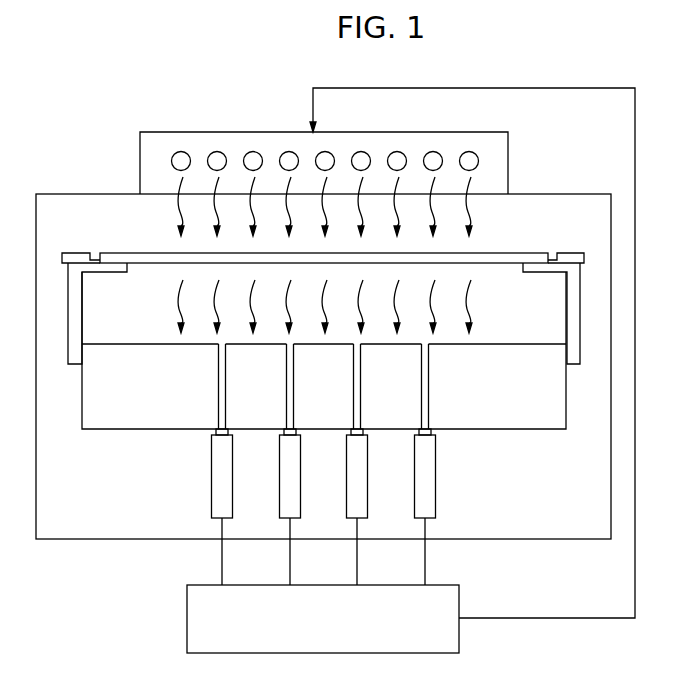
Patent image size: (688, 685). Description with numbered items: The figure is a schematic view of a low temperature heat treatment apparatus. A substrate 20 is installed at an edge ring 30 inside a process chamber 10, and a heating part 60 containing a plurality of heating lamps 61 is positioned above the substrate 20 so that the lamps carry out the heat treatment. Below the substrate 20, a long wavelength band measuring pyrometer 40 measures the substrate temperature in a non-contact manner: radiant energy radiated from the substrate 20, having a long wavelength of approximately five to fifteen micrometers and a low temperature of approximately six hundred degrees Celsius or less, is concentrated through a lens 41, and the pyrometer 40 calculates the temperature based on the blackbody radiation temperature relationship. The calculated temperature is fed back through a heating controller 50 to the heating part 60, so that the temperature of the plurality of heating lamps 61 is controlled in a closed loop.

The process chamber 10 is at (571, 193).
The substrate 20 is at (517, 253).
The edge ring 30 is at (571, 253).
The long wavelength band measuring pyrometer 40 is at (212, 474).
The lens 41 is at (214, 436).
The heating controller 50 is at (447, 584).
The heating part 60 is at (509, 148).
The heating lamps 61 is at (476, 153).